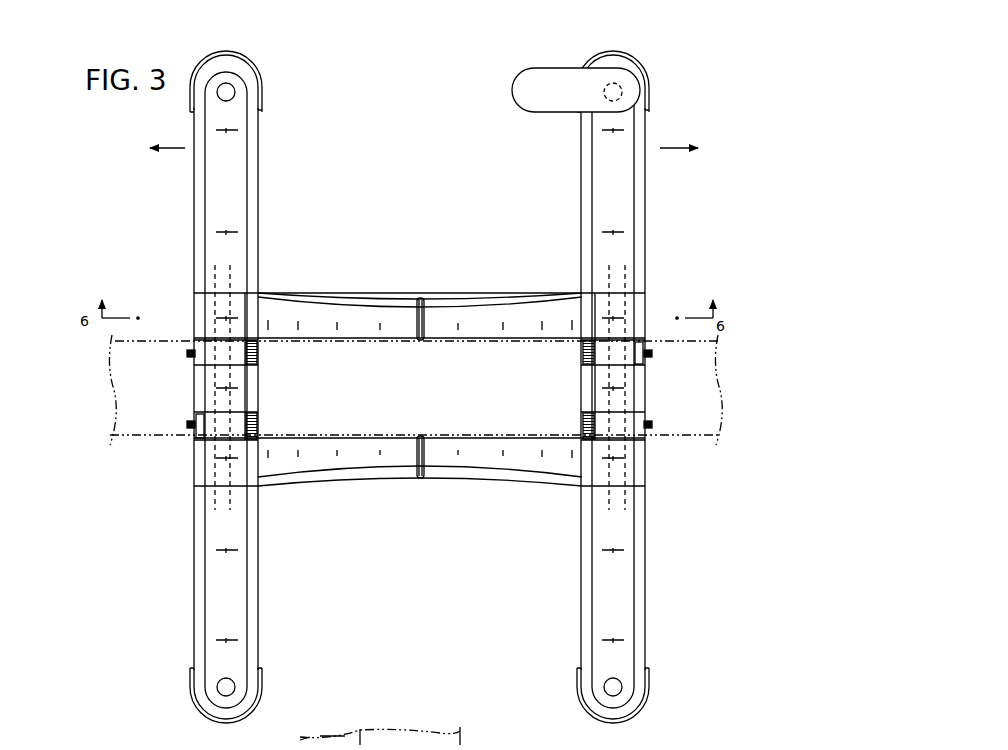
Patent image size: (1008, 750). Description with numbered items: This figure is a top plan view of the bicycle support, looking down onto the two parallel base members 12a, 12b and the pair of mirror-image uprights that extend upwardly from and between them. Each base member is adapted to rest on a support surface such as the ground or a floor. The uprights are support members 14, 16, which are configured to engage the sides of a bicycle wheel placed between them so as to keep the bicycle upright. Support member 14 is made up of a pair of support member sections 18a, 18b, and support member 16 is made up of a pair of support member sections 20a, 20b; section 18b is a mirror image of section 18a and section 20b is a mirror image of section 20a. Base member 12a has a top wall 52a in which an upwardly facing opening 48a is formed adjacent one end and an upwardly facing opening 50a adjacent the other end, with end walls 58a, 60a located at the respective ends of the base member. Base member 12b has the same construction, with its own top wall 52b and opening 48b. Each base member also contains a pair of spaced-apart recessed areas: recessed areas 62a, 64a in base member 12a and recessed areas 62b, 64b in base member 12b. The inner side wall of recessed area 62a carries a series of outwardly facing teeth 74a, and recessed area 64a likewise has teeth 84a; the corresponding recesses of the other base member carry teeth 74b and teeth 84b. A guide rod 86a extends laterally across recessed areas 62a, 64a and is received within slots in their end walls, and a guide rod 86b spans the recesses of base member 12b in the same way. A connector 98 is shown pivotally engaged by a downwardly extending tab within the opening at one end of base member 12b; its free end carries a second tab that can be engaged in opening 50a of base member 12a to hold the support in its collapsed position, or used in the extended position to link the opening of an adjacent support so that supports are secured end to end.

The base member 12a is at (191, 388).
The base member 12b is at (674, 387).
The support member 14 is at (419, 511).
The support member 16 is at (419, 270).
The support member section 18a is at (318, 482).
The support member section 18b is at (503, 482).
The support member section 20a is at (328, 295).
The support member section 20b is at (479, 295).
The upwardly facing opening 48a is at (228, 689).
The upwardly facing opening 48b is at (618, 688).
The upwardly facing opening 50a is at (222, 94).
The top wall 52a is at (218, 581).
The top wall 52b is at (645, 566).
The end wall 58a is at (208, 721).
The end wall 60a is at (238, 56).
The recessed area 62a is at (190, 424).
The recessed area 62b is at (652, 424).
The recessed area 64a is at (190, 353).
The recessed area 64b is at (652, 347).
The teeth 74a is at (262, 420).
The teeth 74b is at (578, 420).
The teeth 84a is at (262, 352).
The teeth 84b is at (578, 352).
The guide rod 86a is at (186, 432).
The guide rod 86b is at (648, 352).
The connector 98 is at (548, 68).